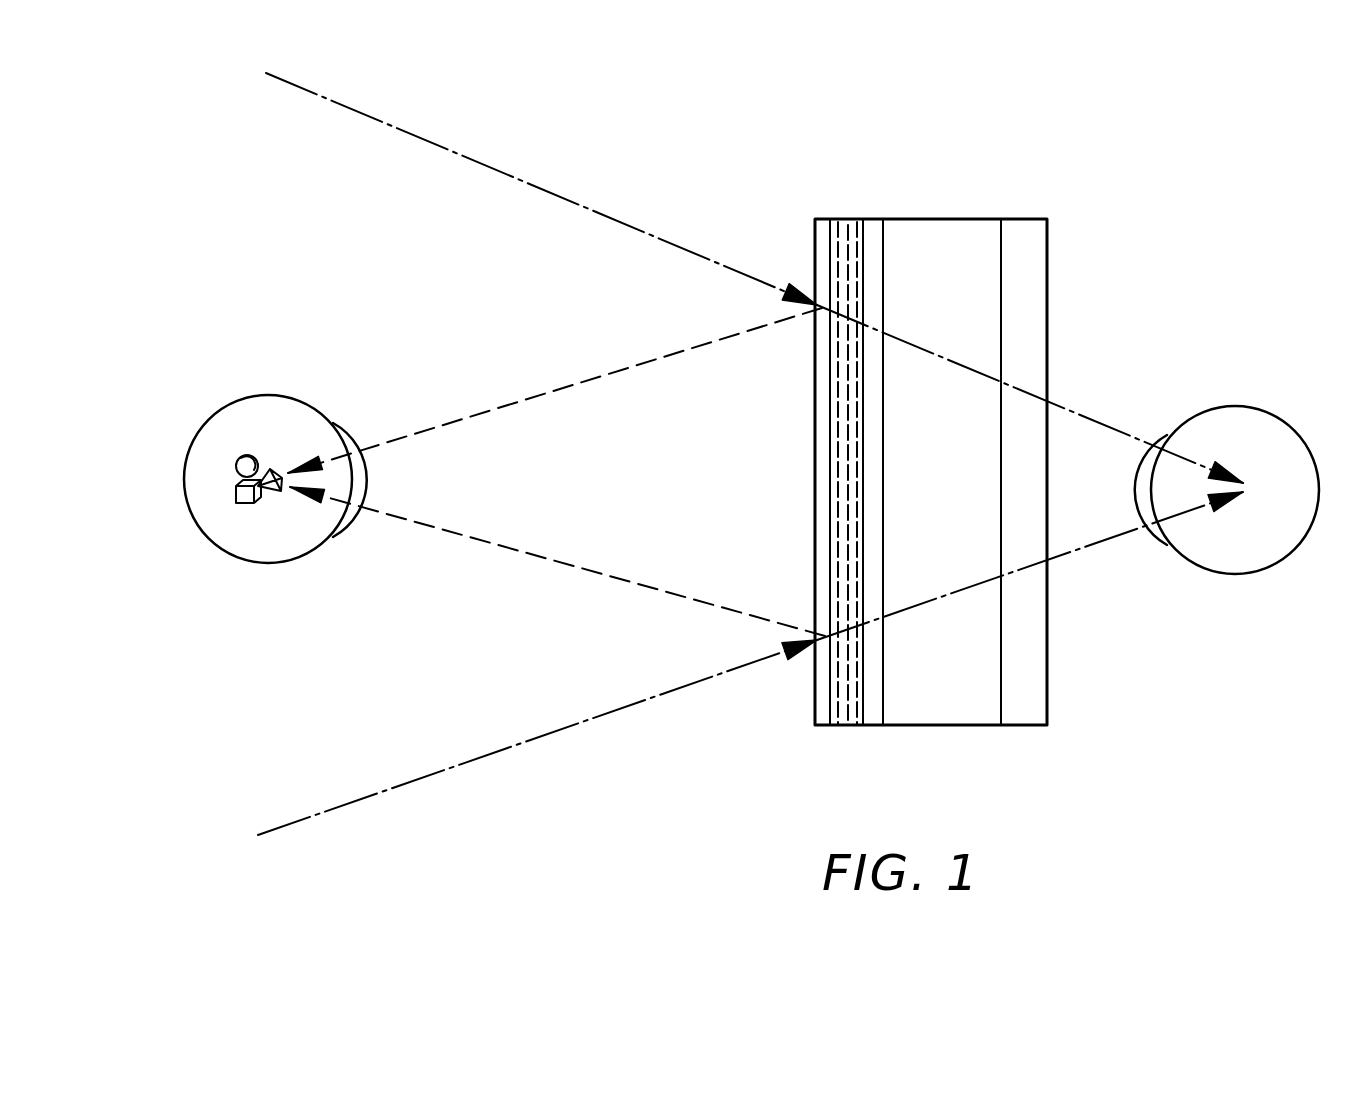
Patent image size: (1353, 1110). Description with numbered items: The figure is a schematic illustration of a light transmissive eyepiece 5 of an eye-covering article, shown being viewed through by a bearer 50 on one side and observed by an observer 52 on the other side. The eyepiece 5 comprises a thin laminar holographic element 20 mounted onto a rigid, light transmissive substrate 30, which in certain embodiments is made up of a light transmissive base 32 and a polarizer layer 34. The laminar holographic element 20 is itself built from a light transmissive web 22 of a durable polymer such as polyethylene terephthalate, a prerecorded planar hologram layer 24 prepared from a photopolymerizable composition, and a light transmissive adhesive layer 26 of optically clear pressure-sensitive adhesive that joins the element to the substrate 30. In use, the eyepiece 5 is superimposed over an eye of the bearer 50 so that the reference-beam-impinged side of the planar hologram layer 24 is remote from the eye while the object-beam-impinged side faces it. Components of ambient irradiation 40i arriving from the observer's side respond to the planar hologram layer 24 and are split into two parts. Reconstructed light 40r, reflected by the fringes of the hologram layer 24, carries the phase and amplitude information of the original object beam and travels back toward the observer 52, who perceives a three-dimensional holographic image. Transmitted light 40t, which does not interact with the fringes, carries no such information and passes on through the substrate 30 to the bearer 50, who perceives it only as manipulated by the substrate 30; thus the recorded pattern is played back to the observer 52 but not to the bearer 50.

The eyepiece 5 is at (1122, 99).
The laminar holographic element 20 is at (880, 214).
The light transmissive web 22 is at (825, 727).
The planar hologram layer 24 is at (852, 727).
The light transmissive adhesive layer 26 is at (873, 727).
The light transmissive substrate 30 is at (1047, 214).
The light transmissive base 32 is at (951, 727).
The polarizer layer 34 is at (1028, 727).
The ambient irradiation 40i is at (567, 202).
The reconstructed light 40r is at (585, 388).
The transmitted light 40t is at (1078, 412).
The bearer 50 is at (1240, 546).
The observer 52 is at (276, 541).